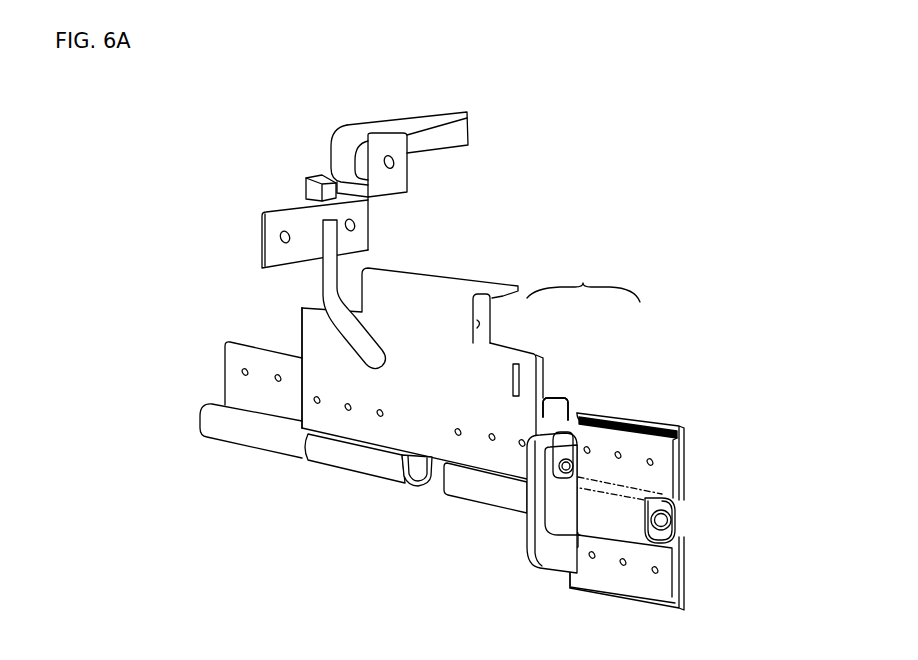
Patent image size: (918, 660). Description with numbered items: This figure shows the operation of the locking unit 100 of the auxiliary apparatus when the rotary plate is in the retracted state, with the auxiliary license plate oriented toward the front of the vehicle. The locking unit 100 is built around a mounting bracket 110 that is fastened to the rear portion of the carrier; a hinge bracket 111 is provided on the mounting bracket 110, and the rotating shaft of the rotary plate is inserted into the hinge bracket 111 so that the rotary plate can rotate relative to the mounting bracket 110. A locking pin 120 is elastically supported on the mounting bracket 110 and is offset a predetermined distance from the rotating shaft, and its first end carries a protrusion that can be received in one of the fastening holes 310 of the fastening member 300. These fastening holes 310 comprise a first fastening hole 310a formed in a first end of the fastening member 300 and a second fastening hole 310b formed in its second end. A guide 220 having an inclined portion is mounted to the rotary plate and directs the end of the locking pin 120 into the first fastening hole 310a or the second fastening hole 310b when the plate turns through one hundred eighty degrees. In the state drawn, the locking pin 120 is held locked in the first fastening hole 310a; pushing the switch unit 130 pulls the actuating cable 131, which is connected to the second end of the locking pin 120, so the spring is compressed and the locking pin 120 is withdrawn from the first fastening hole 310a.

The locking unit 100 is at (283, 302).
The mounting bracket 110 is at (307, 333).
The hinge bracket 111 is at (477, 490).
The locking pin 120 is at (588, 445).
The switch unit 130 is at (432, 119).
The actuating cable 131 is at (333, 290).
The guide 220 is at (668, 422).
The fastening member 300 is at (533, 568).
The fastening holes 310 is at (583, 340).
The first fastening hole 310a is at (570, 460).
The second fastening hole 310b is at (545, 470).